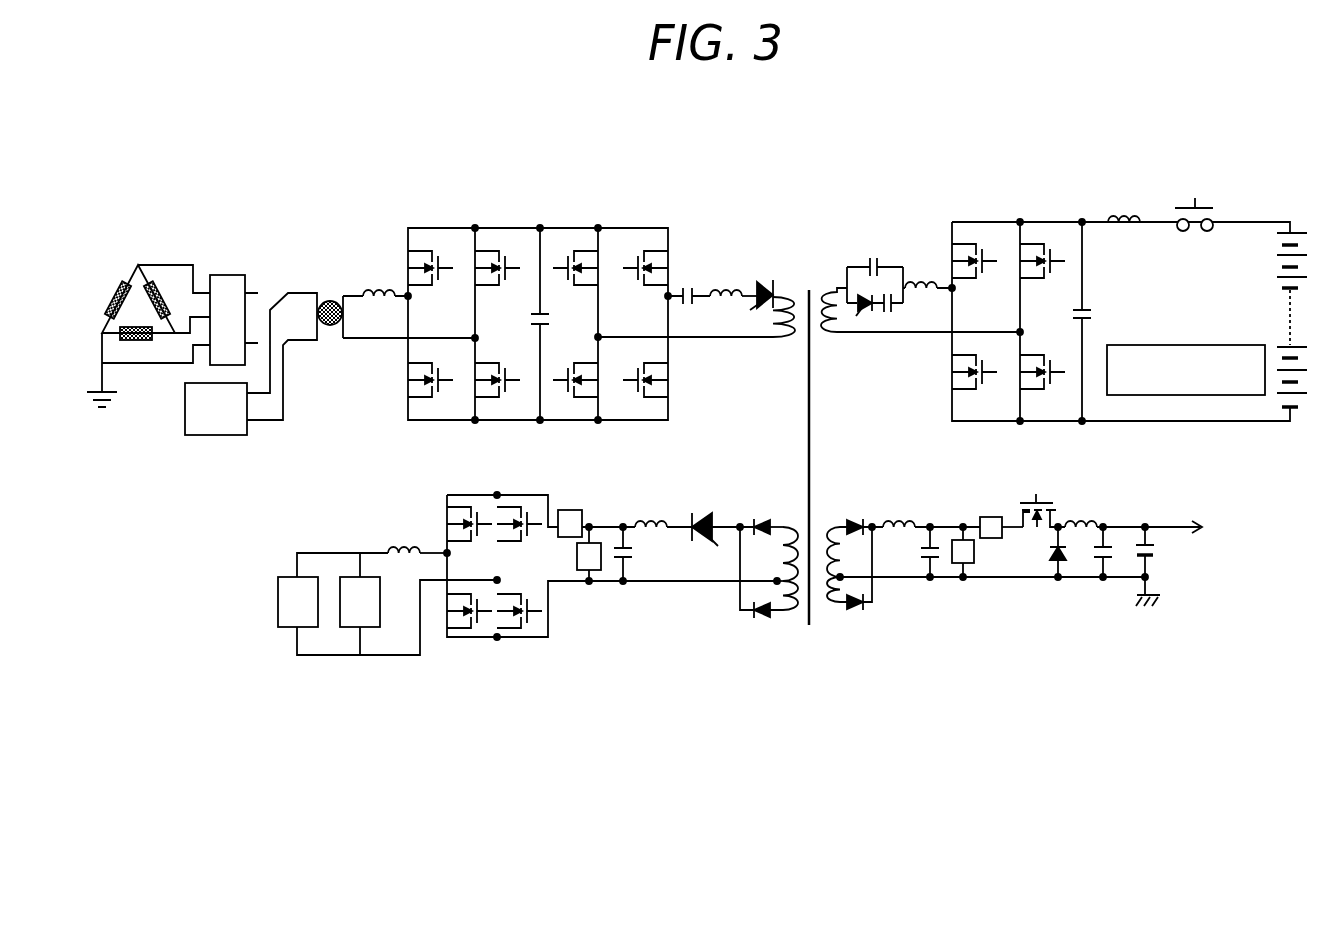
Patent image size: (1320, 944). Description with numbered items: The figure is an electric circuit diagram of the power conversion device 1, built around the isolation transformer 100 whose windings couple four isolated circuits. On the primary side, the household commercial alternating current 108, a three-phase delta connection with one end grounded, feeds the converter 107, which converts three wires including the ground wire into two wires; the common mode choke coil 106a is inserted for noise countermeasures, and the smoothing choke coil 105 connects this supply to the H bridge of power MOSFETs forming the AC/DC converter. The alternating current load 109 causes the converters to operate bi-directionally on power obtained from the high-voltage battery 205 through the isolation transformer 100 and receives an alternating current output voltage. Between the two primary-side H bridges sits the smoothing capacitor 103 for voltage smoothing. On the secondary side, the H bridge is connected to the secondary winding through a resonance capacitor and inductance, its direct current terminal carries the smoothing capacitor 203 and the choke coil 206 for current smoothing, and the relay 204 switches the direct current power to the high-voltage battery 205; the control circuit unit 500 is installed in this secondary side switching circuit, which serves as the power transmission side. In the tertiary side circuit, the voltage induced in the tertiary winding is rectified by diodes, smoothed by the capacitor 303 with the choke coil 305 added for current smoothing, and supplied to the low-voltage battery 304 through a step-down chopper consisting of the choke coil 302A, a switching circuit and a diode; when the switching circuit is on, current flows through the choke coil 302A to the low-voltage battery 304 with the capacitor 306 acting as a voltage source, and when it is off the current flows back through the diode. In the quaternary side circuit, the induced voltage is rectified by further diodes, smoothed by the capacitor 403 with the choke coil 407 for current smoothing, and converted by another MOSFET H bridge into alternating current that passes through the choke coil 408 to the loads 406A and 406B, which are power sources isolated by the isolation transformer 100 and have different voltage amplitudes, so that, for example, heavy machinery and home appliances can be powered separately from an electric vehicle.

The power conversion device 1 is at (150, 107).
The isolation transformer 100 is at (811, 463).
The smoothing capacitor 103 is at (541, 310).
The smoothing choke coil 105 is at (367, 290).
The common mode choke coil 106a is at (331, 326).
The converter 107 is at (228, 274).
The commercial alternating current 108 is at (107, 282).
The alternating current load 109 is at (207, 437).
The smoothing capacitor 203 is at (1086, 310).
The relay 204 is at (1204, 206).
The high-voltage battery 205 is at (1294, 232).
The choke coil 206 is at (1128, 218).
The control circuit unit 500 is at (1190, 344).
The choke coil 302A is at (1081, 522).
The capacitor 303 is at (1097, 561).
The low-voltage battery 304 is at (1160, 546).
The choke coil 305 is at (902, 522).
The capacitor 306 is at (922, 563).
The capacitor 403 is at (628, 562).
The load 406A is at (290, 628).
The load 406B is at (350, 628).
The choke coil 407 is at (650, 521).
The choke coil 408 is at (405, 548).